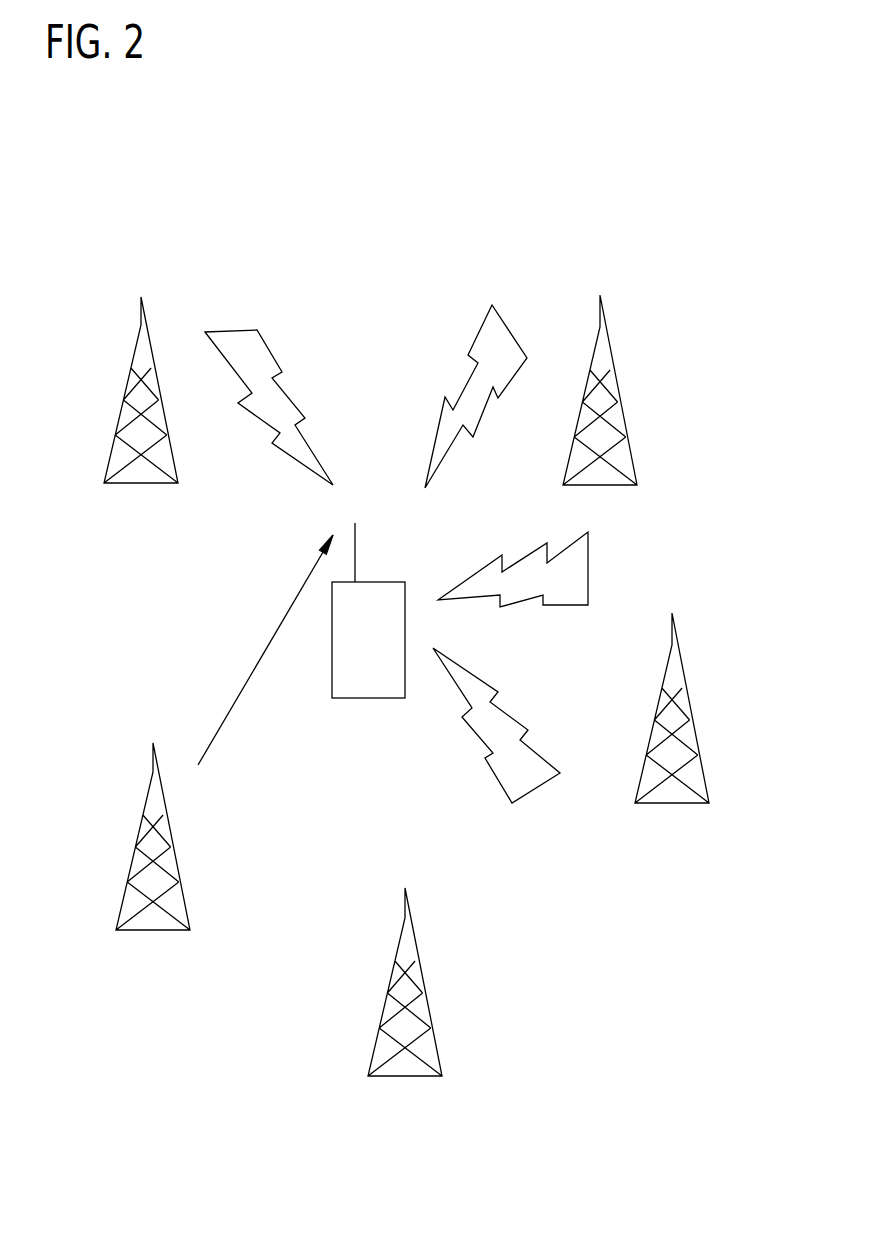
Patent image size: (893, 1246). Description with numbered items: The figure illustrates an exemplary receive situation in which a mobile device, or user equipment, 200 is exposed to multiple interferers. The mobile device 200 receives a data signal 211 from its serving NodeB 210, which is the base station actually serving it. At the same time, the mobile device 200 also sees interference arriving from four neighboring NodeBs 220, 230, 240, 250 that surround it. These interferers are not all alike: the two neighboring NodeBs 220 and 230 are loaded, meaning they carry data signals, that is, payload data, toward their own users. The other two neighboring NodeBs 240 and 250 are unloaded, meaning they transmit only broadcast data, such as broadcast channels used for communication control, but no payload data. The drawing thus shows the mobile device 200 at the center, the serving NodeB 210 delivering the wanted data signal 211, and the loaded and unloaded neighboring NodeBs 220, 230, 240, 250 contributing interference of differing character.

The mobile device 200 is at (368, 702).
The serving NodeB 210 is at (153, 935).
The data signal 211 is at (275, 628).
The neighboring NodeB 220 is at (135, 210).
The neighboring NodeB 230 is at (610, 210).
The neighboring NodeB 240 is at (693, 522).
The neighboring NodeB 250 is at (478, 845).